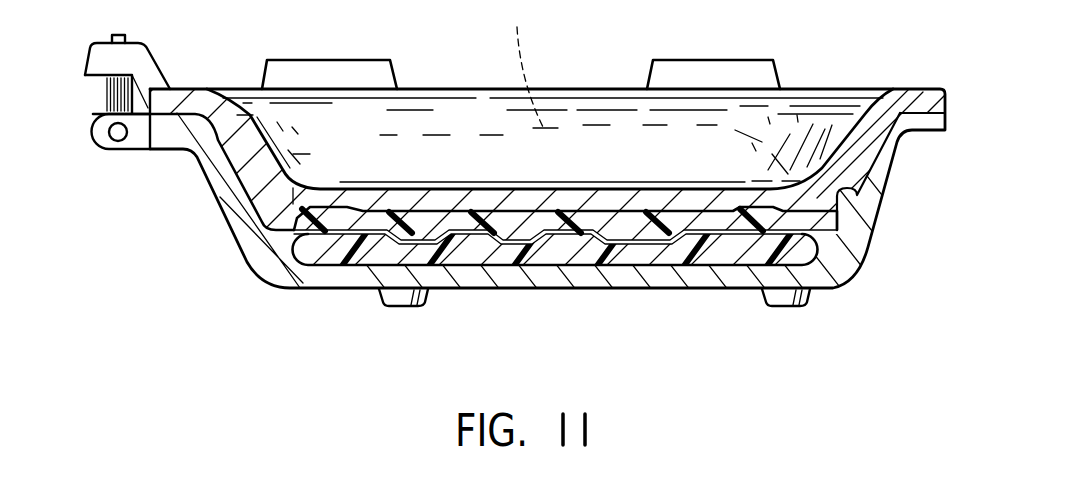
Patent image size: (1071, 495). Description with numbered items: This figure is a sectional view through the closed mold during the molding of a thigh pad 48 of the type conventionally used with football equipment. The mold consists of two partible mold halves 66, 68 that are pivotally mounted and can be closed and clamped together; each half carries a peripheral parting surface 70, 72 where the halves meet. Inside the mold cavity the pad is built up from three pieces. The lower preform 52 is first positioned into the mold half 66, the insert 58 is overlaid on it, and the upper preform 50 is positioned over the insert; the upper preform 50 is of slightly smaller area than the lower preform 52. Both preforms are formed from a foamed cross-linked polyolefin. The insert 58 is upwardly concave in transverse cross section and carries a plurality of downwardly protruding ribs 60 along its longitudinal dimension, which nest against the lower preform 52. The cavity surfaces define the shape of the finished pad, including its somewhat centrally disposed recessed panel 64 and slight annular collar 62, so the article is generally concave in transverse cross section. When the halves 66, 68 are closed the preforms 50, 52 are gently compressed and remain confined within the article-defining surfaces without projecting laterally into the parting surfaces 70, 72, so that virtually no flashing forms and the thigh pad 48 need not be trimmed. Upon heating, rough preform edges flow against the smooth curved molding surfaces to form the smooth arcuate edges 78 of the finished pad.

The thigh pad 48 is at (528, 180).
The upper preform 50 is at (723, 220).
The lower preform 52 is at (718, 250).
The insert 58 is at (452, 231).
The ribs 60 is at (620, 250).
The annular collar 62 is at (321, 192).
The recessed panel 64 is at (640, 210).
The mold half 66 is at (253, 255).
The mold half 68 is at (920, 90).
The parting surface 70 is at (857, 196).
The parting surface 72 is at (284, 234).
The smooth arcuate edges 78 is at (293, 212).